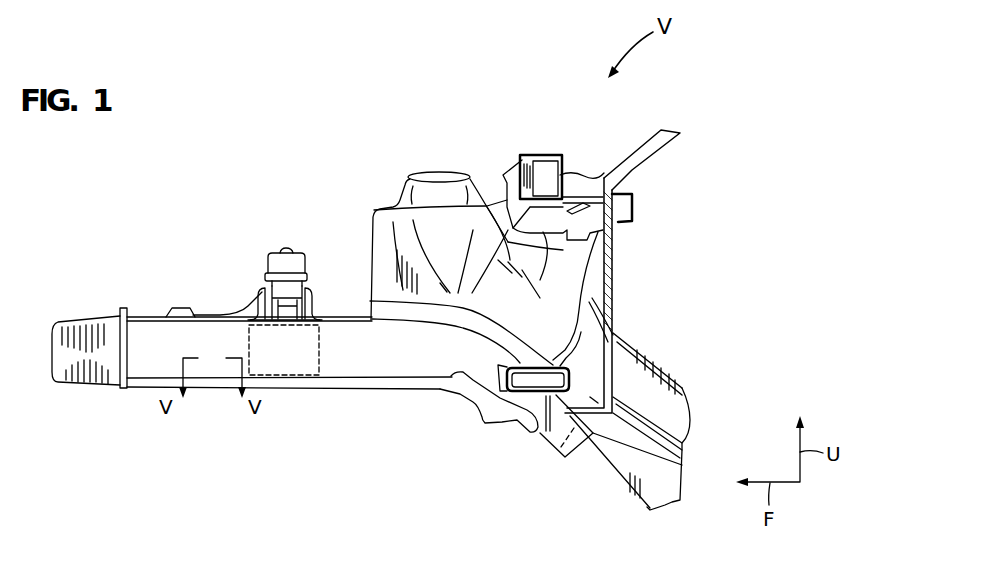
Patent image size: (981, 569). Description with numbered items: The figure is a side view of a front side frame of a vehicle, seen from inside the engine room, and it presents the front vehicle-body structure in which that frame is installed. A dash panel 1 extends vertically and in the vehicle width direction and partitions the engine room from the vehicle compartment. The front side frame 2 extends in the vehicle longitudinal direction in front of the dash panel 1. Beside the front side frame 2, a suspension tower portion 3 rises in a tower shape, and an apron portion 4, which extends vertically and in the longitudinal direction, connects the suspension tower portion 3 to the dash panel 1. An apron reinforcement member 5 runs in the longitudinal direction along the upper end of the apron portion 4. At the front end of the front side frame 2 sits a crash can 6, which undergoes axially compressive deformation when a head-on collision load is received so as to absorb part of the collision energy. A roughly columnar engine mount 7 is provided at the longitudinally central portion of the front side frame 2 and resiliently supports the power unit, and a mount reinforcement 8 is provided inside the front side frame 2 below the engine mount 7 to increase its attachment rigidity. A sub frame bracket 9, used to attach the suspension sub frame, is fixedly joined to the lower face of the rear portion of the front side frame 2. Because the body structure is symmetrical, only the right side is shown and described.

The dash panel 1 is at (615, 245).
The front side frame 2 is at (189, 308).
The suspension tower portion 3 is at (428, 177).
The apron portion 4 is at (487, 192).
The apron reinforcement member 5 is at (492, 196).
The crash can 6 is at (84, 317).
The engine mount 7 is at (270, 258).
The mount reinforcement 8 is at (323, 377).
The sub frame bracket 9 is at (502, 423).